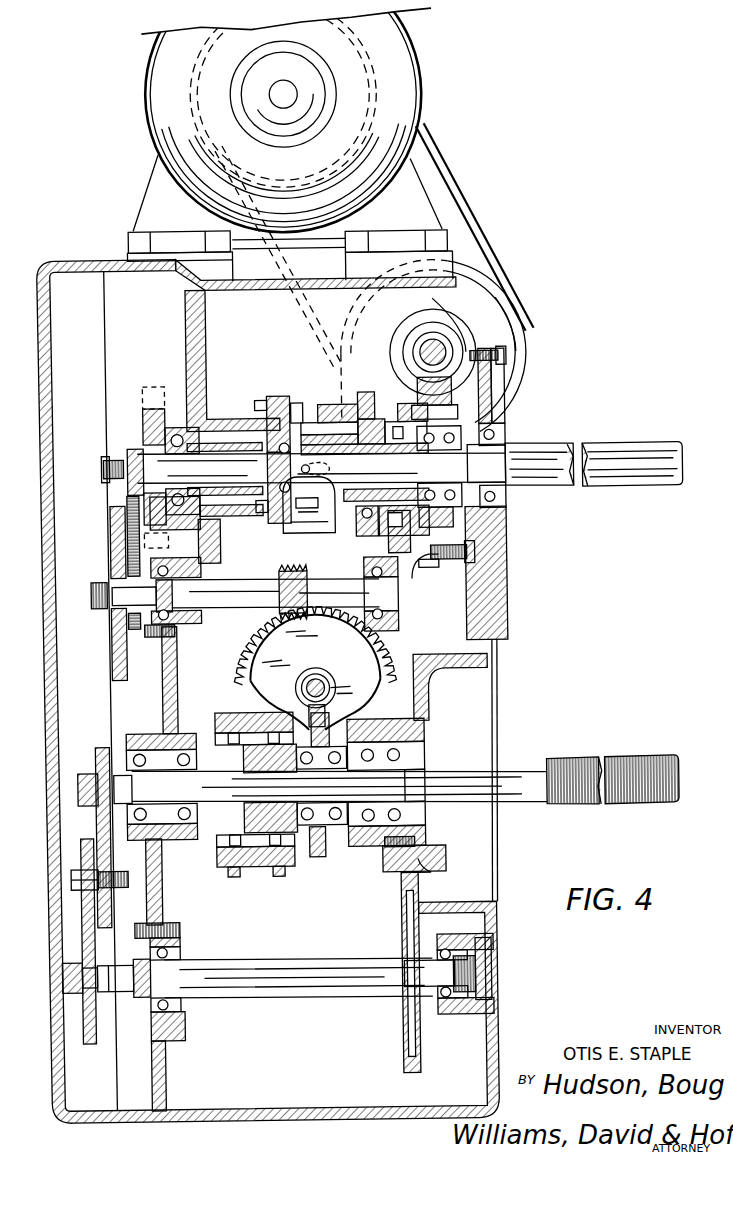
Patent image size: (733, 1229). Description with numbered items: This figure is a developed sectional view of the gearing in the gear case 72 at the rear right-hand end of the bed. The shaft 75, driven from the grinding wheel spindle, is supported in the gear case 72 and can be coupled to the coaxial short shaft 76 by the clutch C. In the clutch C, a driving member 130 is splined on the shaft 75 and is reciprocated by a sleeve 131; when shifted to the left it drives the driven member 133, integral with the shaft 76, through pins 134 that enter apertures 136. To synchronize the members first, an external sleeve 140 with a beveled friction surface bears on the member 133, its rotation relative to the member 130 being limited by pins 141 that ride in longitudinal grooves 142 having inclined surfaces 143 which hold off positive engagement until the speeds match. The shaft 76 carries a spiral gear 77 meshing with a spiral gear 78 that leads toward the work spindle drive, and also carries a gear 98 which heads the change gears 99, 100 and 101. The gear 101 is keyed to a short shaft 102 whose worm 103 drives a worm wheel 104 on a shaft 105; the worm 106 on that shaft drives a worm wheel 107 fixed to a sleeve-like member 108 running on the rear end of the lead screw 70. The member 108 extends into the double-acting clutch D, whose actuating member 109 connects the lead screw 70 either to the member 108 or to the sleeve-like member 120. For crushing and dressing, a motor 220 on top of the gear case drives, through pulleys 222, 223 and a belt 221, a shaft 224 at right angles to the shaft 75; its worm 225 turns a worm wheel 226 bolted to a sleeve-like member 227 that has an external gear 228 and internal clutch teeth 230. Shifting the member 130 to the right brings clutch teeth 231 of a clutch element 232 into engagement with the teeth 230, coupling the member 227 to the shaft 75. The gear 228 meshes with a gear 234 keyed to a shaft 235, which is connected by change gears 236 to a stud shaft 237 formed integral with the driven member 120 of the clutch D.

The motor 220 is at (413, 76).
The pulley 222 is at (190, 88).
The belt 221 is at (448, 190).
The gear case 72 is at (497, 302).
The pulley 223 is at (513, 338).
The shaft 224 is at (437, 341).
The worm 225 is at (455, 343).
The sleeve-like member 227 is at (500, 398).
The shaft 75 is at (622, 447).
The gear 98 is at (133, 450).
The spiral gear 77 is at (149, 410).
The spiral gear 78 is at (156, 384).
The gear 99 is at (128, 504).
The driven member 133 is at (272, 408).
The apertures 136 is at (272, 420).
The clutch C is at (283, 392).
The longitudinal groove 142 is at (265, 400).
The pins 134 is at (312, 404).
The pins 141 is at (338, 404).
The sleeve 131 is at (366, 394).
The driving member 130 is at (405, 404).
The clutch teeth 231 is at (400, 427).
The external gear 228 is at (470, 520).
The clutch element 232 is at (332, 473).
The inclined surfaces 143 is at (309, 505).
The worm wheel 226 is at (446, 562).
The gear 234 is at (430, 570).
The clutch teeth 230 is at (413, 580).
The short shaft 102 is at (238, 609).
The gear 100 is at (112, 548).
The gear 101 is at (114, 648).
The short shaft 76 is at (222, 526).
The worm 103 is at (312, 555).
The sleeve 140 is at (360, 558).
The worm wheel 104 is at (248, 660).
The shaft 105 is at (311, 679).
The worm 106 is at (334, 686).
The lead screw 70 is at (636, 770).
The stud shaft 237 is at (160, 722).
The change gears 236 is at (82, 850).
The sleeve-like member 120 is at (208, 740).
The actuating member 109 is at (236, 712).
The double-acting clutch D is at (214, 856).
The sleeve-like member 108 is at (286, 866).
The worm wheel 107 is at (326, 864).
The shaft 235 is at (350, 992).